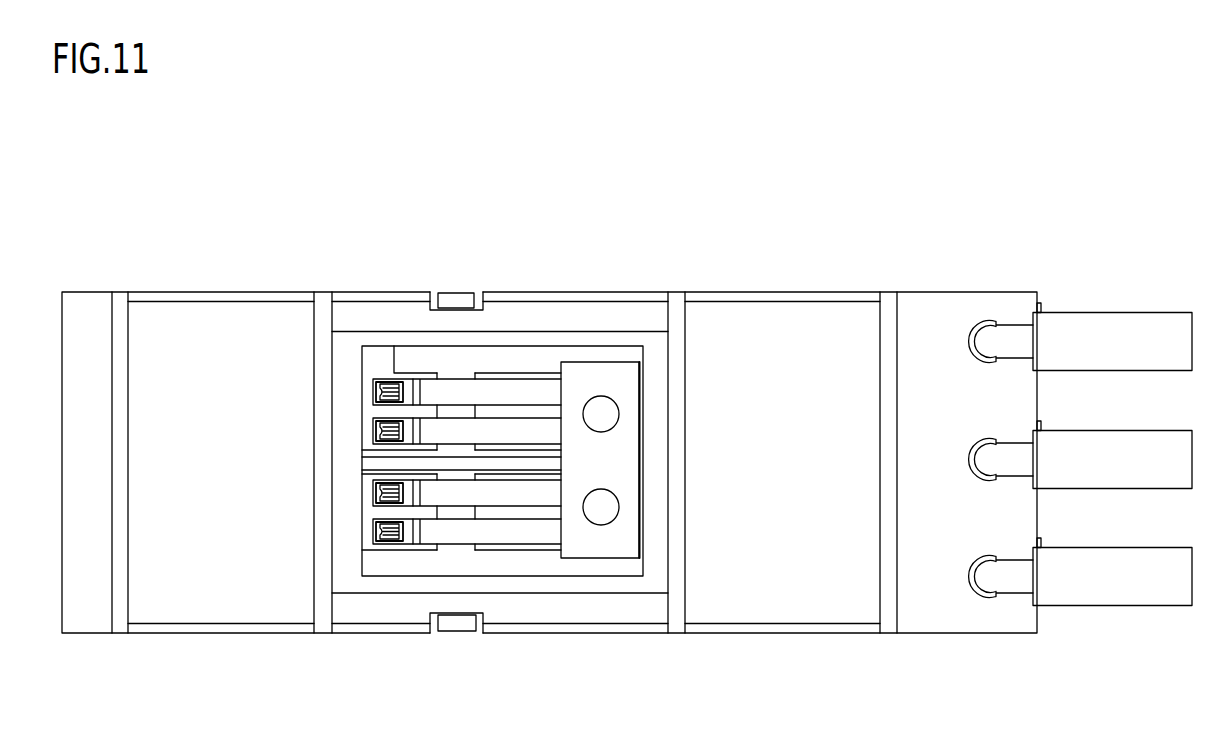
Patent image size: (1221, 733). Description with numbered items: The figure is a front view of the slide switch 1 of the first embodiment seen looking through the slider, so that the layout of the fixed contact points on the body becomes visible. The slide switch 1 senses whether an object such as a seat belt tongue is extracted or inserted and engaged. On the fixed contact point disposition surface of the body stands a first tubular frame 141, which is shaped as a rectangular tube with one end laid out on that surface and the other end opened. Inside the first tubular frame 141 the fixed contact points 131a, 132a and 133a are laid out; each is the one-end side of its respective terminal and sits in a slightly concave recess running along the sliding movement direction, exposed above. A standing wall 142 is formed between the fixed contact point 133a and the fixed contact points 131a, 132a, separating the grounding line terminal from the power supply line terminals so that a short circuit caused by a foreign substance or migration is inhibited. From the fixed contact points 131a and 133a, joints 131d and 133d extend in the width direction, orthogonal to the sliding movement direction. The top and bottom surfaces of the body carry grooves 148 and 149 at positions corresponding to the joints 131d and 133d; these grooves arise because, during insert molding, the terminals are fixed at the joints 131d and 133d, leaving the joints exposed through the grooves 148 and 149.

The slide switch 1 is at (1042, 183).
The first tubular frame 141 is at (345, 342).
The fixed contact point 131a is at (368, 405).
The joint 131d is at (453, 292).
The groove 148 is at (478, 287).
The fixed contact point 132a is at (523, 408).
The standing wall 142 is at (368, 462).
The fixed contact point 133a is at (437, 515).
The joint 133d is at (450, 626).
The groove 149 is at (480, 634).